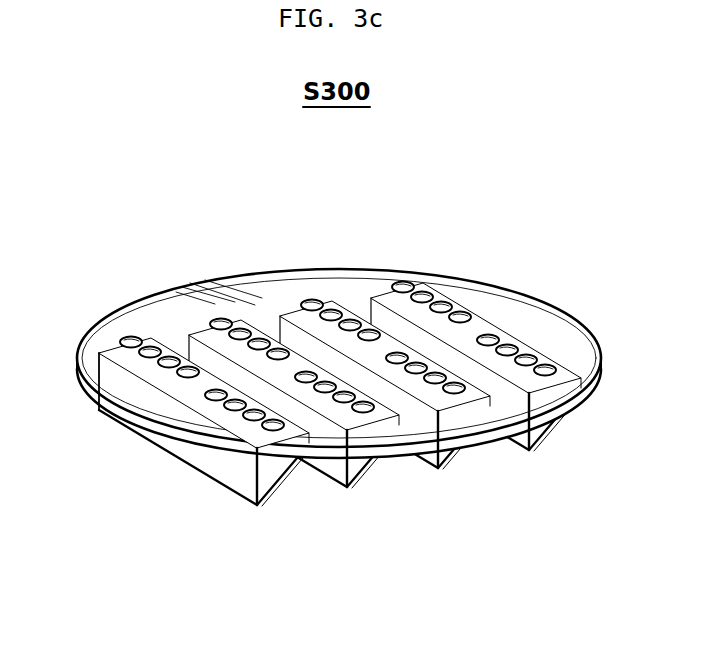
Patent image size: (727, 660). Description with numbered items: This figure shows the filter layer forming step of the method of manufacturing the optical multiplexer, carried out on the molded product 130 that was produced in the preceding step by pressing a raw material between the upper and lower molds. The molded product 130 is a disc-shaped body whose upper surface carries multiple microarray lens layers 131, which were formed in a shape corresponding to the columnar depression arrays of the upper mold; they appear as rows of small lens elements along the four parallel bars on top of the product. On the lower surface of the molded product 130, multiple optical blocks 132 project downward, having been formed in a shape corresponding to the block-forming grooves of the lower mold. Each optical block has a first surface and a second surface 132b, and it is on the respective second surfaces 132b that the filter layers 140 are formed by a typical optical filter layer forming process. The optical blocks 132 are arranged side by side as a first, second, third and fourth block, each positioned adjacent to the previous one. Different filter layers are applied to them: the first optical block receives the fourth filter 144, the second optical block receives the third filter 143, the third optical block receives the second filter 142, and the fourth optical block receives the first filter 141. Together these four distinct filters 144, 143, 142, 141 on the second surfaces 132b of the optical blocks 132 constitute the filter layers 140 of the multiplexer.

The molded product 130 is at (470, 272).
The microarray lens layers 131 is at (203, 395).
The optical blocks 132 is at (210, 465).
The second surface 132b is at (255, 482).
The filter layers 140 is at (324, 464).
The first filter 141 is at (552, 450).
The second filter 142 is at (453, 468).
The third filter 143 is at (368, 472).
The fourth filter 144 is at (189, 459).